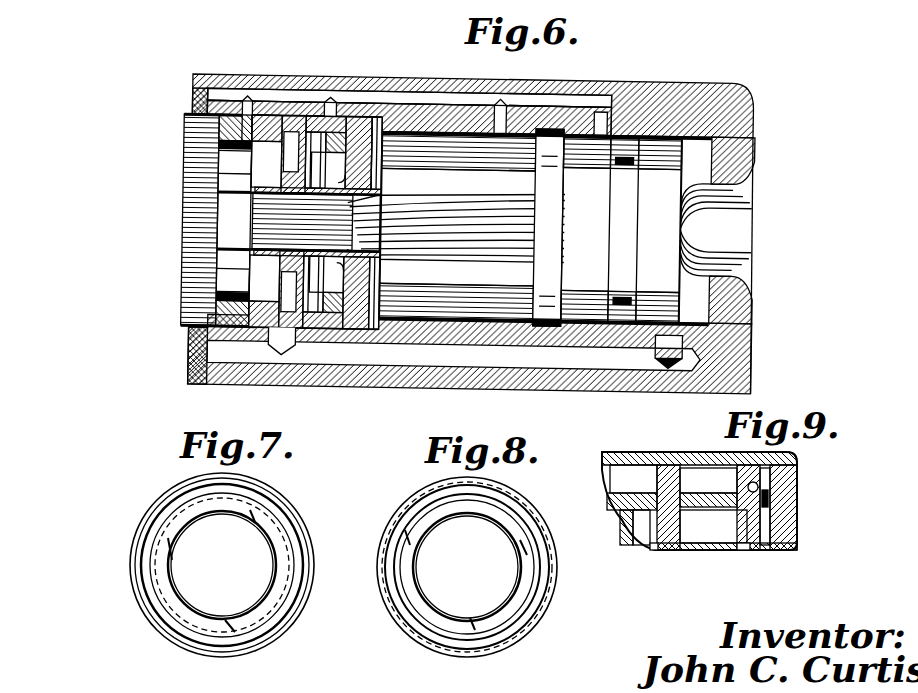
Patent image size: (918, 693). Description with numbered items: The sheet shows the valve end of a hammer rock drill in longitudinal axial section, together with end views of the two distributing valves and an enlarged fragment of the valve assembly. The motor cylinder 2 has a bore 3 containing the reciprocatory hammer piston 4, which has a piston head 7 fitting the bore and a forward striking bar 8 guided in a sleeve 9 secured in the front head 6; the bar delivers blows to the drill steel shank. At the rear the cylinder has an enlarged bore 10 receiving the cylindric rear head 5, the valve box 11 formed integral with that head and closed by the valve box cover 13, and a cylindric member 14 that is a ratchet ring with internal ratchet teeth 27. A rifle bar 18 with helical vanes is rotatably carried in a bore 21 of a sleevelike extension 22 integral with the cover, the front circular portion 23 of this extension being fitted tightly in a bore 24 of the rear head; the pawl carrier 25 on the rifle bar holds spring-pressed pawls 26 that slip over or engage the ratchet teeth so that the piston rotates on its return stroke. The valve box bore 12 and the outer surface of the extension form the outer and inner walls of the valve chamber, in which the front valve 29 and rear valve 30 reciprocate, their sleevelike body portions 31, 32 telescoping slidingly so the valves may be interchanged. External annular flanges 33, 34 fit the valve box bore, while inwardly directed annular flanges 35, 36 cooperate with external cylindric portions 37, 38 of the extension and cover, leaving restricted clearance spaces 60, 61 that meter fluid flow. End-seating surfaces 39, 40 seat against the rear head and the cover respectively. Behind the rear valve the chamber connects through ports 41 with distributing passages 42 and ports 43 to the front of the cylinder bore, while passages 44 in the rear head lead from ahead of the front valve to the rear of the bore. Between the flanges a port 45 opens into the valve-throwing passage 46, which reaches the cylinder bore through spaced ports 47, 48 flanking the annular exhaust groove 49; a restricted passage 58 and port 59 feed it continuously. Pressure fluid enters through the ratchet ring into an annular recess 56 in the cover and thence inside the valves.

In FIG. 6, the motor cylinder 2 is at (470, 336).
In FIG. 6, the bore 3 is at (403, 332).
In FIG. 6, the hammer piston 4 is at (667, 115).
In FIG. 6, the rear head 5 is at (423, 181).
In FIG. 9, the rear head 5 is at (800, 512).
In FIG. 6, the front head 6 is at (749, 136).
In FIG. 6, the piston head 7 is at (626, 305).
In FIG. 6, the striking bar 8 is at (742, 206).
In FIG. 6, the sleeve 9 is at (750, 160).
In FIG. 6, the enlarged bore 10 is at (316, 140).
In FIG. 6, the valve box 11 is at (330, 326).
In FIG. 9, the valve box 11 is at (612, 456).
In FIG. 6, the bore 12 is at (318, 326).
In FIG. 9, the bore 12 is at (704, 468).
In FIG. 6, the valve box cover 13 is at (268, 122).
In FIG. 9, the valve box cover 13 is at (625, 505).
In FIG. 6, the cylindric member 14 is at (198, 337).
In FIG. 6, the rifle bar 18 is at (488, 205).
In FIG. 6, the bore 21 is at (408, 191).
In FIG. 6, the sleevelike extension 22 is at (326, 274).
In FIG. 6, the front circular portion 23 is at (386, 262).
In FIG. 6, the bore 24 is at (387, 309).
In FIG. 6, the pawl carrier 25 is at (205, 232).
In FIG. 6, the pawls 26 is at (222, 160).
In FIG. 6, the ratchet teeth 27 is at (218, 142).
In FIG. 6, the front valve 29 is at (355, 125).
In FIG. 7, the front valve 29 is at (230, 646).
In FIG. 9, the front valve 29 is at (760, 485).
In FIG. 6, the rear valve 30 is at (330, 105).
In FIG. 8, the rear valve 30 is at (450, 657).
In FIG. 9, the rear valve 30 is at (637, 475).
In FIG. 6, the sleevelike body portion 31 is at (328, 170).
In FIG. 7, the sleevelike body portion 31 is at (278, 608).
In FIG. 9, the sleevelike body portion 31 is at (713, 526).
In FIG. 6, the sleevelike body portion 32 is at (338, 140).
In FIG. 8, the sleevelike body portion 32 is at (400, 597).
In FIG. 9, the sleevelike body portion 32 is at (708, 481).
In FIG. 6, the external annular flange 33 is at (342, 326).
In FIG. 7, the external annular flange 33 is at (272, 497).
In FIG. 9, the external annular flange 33 is at (790, 458).
In FIG. 6, the external annular flange 34 is at (300, 326).
In FIG. 8, the external annular flange 34 is at (415, 501).
In FIG. 9, the external annular flange 34 is at (664, 480).
In FIG. 6, the inwardly directed annular flange 35 is at (366, 128).
In FIG. 7, the inwardly directed annular flange 35 is at (172, 603).
In FIG. 9, the inwardly directed annular flange 35 is at (785, 530).
In FIG. 6, the inwardly directed annular flange 36 is at (266, 278).
In FIG. 8, the inwardly directed annular flange 36 is at (530, 606).
In FIG. 9, the inwardly directed annular flange 36 is at (640, 535).
In FIG. 6, the external cylindric portion 37 is at (383, 180).
In FIG. 9, the external cylindric portion 37 is at (775, 550).
In FIG. 6, the external cylindric portion 38 is at (266, 164).
In FIG. 9, the external cylindric portion 38 is at (655, 550).
In FIG. 6, the annular end-seating surface 39 is at (375, 140).
In FIG. 7, the annular end-seating surface 39 is at (285, 528).
In FIG. 9, the annular end-seating surface 39 is at (771, 500).
In FIG. 6, the annular end-seating surface 40 is at (292, 132).
In FIG. 9, the annular end-seating surface 40 is at (618, 497).
In FIG. 6, the ports 41 is at (285, 350).
In FIG. 6, the distributing passages 42 is at (510, 355).
In FIG. 6, the ports 43 is at (758, 338).
In FIG. 6, the passages 44 is at (376, 326).
In FIG. 6, the port 45 is at (333, 118).
In FIG. 6, the valve-throwing passage 46 is at (471, 94).
In FIG. 6, the port 47 is at (502, 98).
In FIG. 6, the port 48 is at (604, 112).
In FIG. 6, the annular exhaust groove 49 is at (552, 126).
In FIG. 6, the annular recess 56 is at (260, 324).
In FIG. 6, the restricted passage 58 is at (195, 108).
In FIG. 6, the port 59 is at (243, 112).
In FIG. 6, the restricted clearance space 60 is at (357, 326).
In FIG. 9, the restricted clearance space 60 is at (742, 550).
In FIG. 6, the restricted clearance space 61 is at (316, 308).
In FIG. 9, the restricted clearance space 61 is at (700, 548).